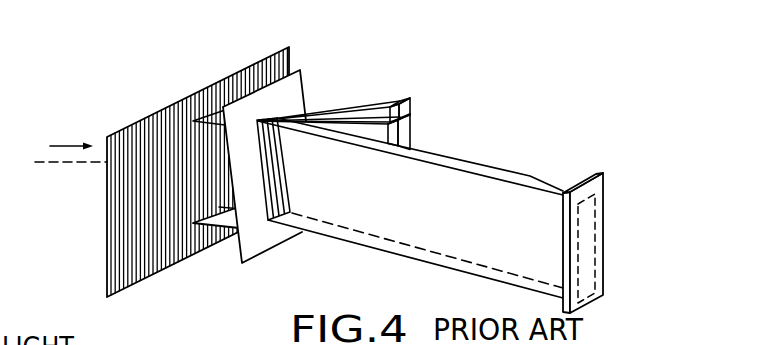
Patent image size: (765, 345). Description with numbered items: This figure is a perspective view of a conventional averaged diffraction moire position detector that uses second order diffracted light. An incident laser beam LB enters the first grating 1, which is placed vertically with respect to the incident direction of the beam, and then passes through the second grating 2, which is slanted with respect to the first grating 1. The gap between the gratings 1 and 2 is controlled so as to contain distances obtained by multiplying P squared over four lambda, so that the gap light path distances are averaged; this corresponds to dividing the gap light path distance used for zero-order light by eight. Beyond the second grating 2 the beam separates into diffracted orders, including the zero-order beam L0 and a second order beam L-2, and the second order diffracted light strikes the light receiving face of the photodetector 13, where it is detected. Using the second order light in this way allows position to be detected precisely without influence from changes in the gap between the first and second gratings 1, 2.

The first grating 1 is at (183, 101).
The second grating 2 is at (270, 113).
The photodetector 13 is at (628, 167).
The laser beam LB is at (58, 165).
The zero-order diffracted light L0 is at (375, 119).
The -2nd order diffracted light L-2 is at (446, 158).